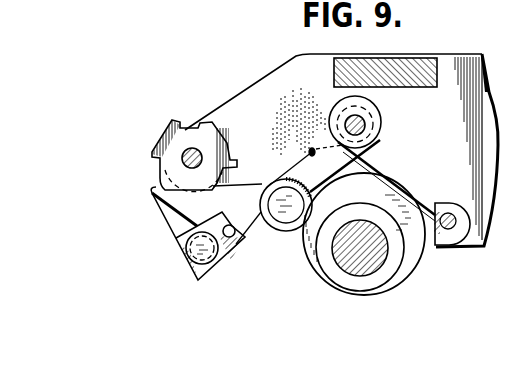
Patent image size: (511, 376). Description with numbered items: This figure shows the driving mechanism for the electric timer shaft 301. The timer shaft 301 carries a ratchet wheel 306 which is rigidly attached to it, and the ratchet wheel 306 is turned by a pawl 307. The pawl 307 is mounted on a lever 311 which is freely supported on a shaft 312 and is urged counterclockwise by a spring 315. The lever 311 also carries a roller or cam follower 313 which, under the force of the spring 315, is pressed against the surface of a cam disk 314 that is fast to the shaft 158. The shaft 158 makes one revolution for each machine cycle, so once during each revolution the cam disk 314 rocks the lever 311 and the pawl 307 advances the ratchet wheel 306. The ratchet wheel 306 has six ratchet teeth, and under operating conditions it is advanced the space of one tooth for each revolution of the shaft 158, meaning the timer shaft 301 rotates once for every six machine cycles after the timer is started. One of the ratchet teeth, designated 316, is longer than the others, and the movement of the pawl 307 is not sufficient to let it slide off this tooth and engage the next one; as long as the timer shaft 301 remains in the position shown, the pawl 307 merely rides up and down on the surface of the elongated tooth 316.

The shaft 158 is at (367, 263).
The timer shaft 301 is at (183, 153).
The ratchet wheel 306 is at (192, 128).
The pawl 307 is at (155, 198).
The lever 311 is at (254, 243).
The shaft 312 is at (367, 125).
The roller or cam follower 313 is at (288, 232).
The cam disk 314 is at (417, 255).
The spring 315 is at (373, 163).
The ratchet tooth 316 is at (152, 190).